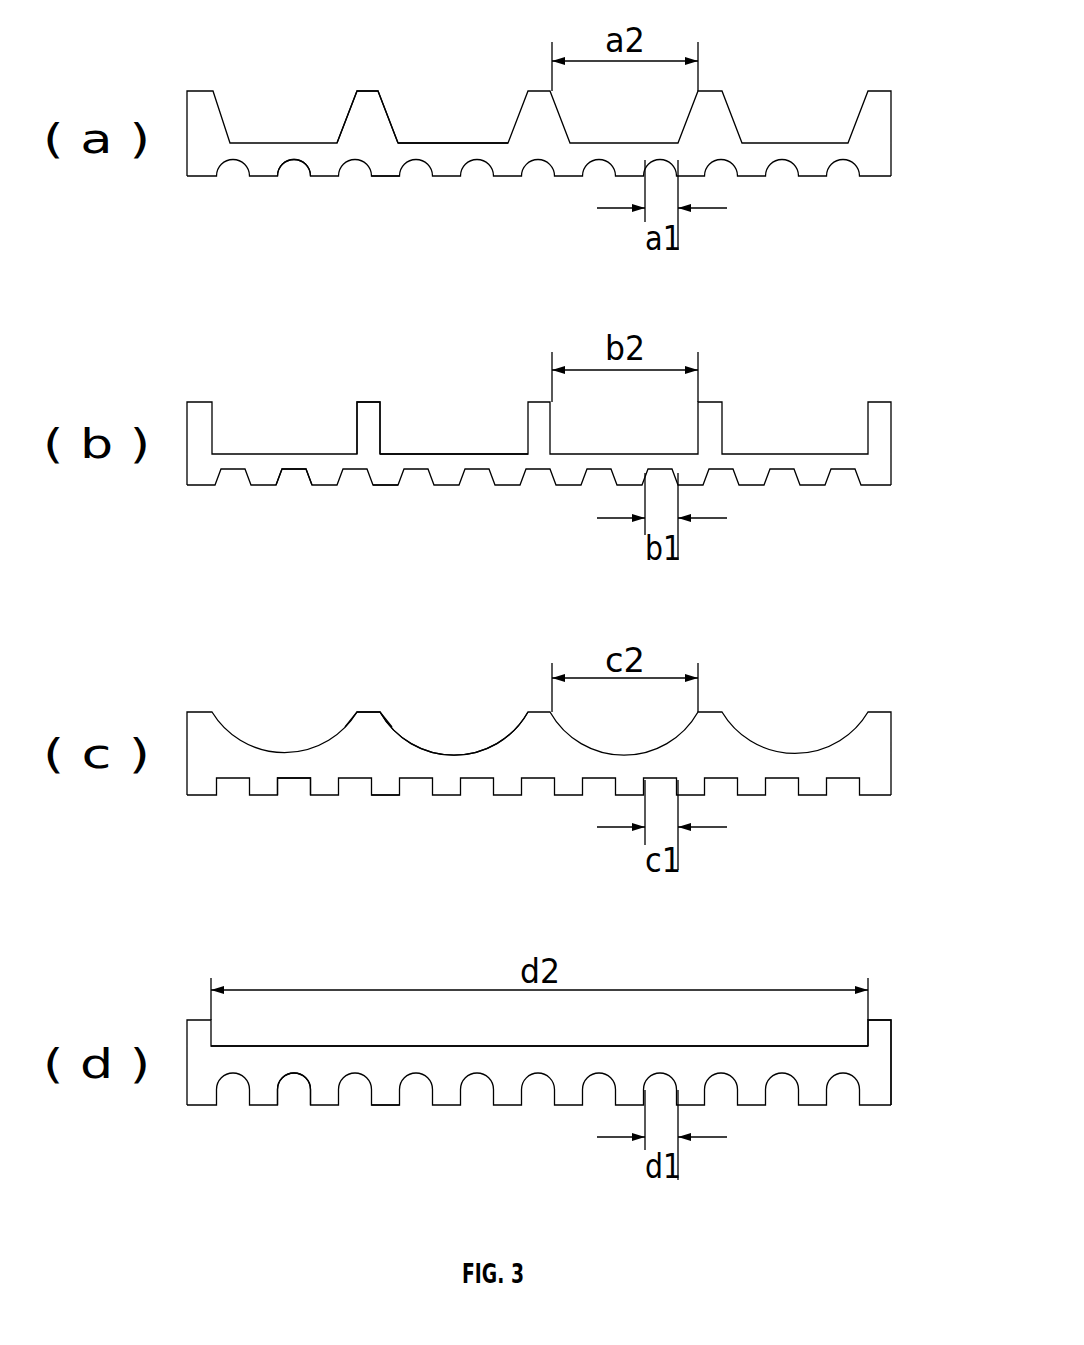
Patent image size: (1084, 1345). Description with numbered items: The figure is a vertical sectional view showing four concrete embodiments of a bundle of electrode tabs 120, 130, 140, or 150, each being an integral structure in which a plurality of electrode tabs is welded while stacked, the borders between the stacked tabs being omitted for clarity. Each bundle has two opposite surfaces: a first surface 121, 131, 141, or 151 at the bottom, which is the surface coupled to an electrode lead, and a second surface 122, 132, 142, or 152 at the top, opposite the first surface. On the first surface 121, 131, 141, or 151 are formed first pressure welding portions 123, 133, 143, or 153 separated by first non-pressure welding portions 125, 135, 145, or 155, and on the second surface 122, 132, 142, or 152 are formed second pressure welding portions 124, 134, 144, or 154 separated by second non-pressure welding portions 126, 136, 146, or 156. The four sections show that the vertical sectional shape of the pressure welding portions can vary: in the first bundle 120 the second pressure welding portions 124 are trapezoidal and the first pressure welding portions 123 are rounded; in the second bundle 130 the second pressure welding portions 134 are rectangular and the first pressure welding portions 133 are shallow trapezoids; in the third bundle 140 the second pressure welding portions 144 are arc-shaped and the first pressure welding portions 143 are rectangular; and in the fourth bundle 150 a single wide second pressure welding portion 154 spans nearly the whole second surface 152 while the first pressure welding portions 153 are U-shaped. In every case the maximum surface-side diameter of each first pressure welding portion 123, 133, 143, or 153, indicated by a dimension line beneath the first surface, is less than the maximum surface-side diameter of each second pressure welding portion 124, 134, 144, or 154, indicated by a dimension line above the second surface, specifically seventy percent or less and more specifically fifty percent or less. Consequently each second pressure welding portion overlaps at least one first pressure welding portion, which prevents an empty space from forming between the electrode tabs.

The bundle of electrode tabs 120 is at (248, 41).
The first surface 121 is at (822, 189).
The second surface 122 is at (822, 90).
The first pressure welding portion 123 is at (294, 162).
The second pressure welding portion 124 is at (452, 143).
The first non-pressure welding portion 125 is at (385, 177).
The second non-pressure welding portion 126 is at (374, 90).
The bundle of electrode tabs 130 is at (248, 350).
The first surface 131 is at (822, 497).
The second surface 132 is at (822, 400).
The first pressure welding portion 133 is at (294, 470).
The second pressure welding portion 134 is at (452, 454).
The first non-pressure welding portion 135 is at (385, 486).
The second non-pressure welding portion 136 is at (374, 402).
The bundle of electrode tabs 140 is at (248, 659).
The first surface 141 is at (822, 805).
The second surface 142 is at (822, 710).
The first pressure welding portion 143 is at (294, 780).
The second pressure welding portion 144 is at (452, 753).
The first non-pressure welding portion 145 is at (385, 796).
The second non-pressure welding portion 146 is at (374, 712).
The bundle of electrode tabs 150 is at (248, 968).
The first surface 151 is at (822, 1112).
The second surface 152 is at (823, 1012).
The first pressure welding portion 153 is at (294, 1075).
The second pressure welding portion 154 is at (412, 1046).
The first non-pressure welding portion 155 is at (381, 1106).
The second non-pressure welding portion 156 is at (880, 1020).